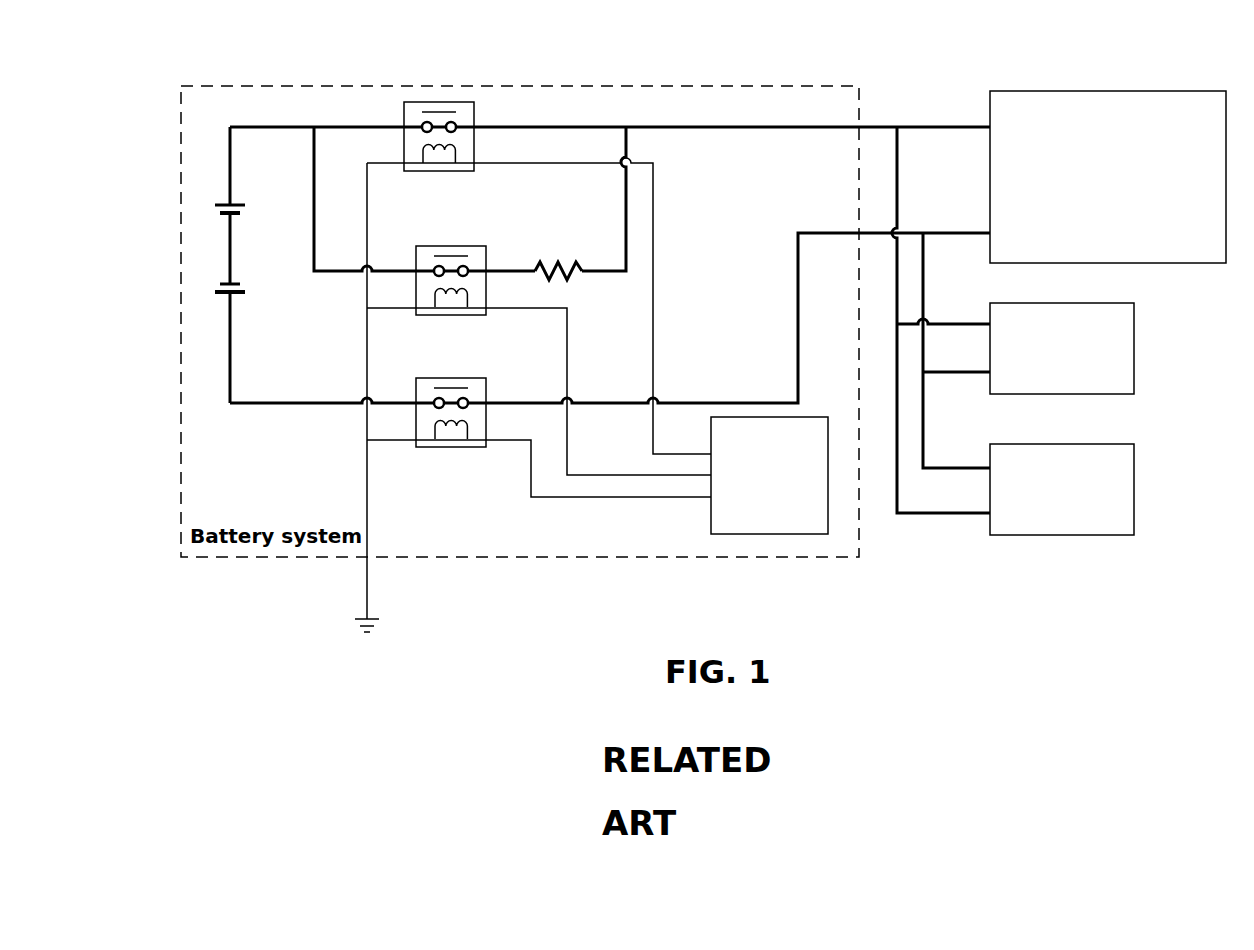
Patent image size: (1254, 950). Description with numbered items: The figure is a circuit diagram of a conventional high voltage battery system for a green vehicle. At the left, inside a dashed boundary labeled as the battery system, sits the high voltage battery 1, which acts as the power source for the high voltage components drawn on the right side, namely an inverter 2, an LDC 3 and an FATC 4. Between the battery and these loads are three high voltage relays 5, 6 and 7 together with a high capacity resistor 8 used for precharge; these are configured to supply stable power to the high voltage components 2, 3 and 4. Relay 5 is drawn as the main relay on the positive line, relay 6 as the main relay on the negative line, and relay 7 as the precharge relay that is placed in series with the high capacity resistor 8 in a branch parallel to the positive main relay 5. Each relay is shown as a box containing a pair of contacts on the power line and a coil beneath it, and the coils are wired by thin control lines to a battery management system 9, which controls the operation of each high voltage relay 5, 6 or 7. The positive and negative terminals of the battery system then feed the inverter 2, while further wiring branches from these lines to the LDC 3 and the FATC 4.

The high voltage battery 1 is at (228, 145).
The inverter 2 is at (1071, 91).
The LDC 3 is at (1134, 370).
The FATC 4 is at (1090, 535).
The high voltage relay 5 is at (474, 110).
The high voltage relay 6 is at (486, 384).
The high voltage relay 7 is at (486, 247).
The high capacity resistor 8 is at (566, 262).
The battery management system 9 is at (763, 534).